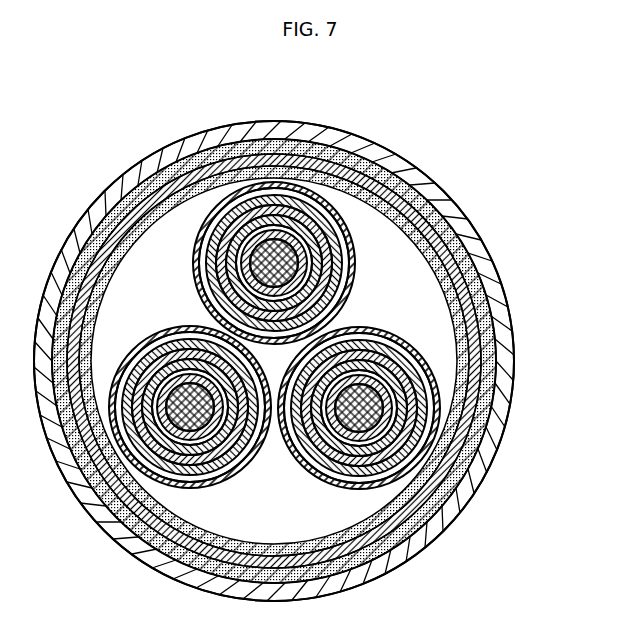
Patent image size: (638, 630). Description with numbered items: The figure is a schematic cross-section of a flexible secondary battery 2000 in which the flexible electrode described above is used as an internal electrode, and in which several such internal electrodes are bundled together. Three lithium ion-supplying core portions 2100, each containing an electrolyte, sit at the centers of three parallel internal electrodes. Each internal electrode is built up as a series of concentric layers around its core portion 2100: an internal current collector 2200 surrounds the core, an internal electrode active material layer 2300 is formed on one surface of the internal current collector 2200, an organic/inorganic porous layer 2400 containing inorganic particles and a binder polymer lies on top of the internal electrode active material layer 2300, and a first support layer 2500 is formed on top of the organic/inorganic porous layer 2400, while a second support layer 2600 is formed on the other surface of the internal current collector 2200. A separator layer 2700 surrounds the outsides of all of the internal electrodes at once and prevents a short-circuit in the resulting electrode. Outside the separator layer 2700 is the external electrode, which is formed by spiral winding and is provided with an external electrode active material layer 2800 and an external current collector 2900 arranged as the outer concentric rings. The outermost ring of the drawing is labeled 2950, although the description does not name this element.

The flexible secondary battery 2000 is at (93, 147).
The lithium ion-supplying core portion 2100 is at (272, 228).
The second support layer 2600 is at (283, 215).
The internal current collector 2200 is at (302, 210).
The internal electrode active material layer 2300 is at (330, 205).
The organic/inorganic porous layer 2400 is at (360, 245).
The first support layer 2500 is at (380, 243).
The separator layer 2700 is at (413, 263).
The external electrode active material layer 2800 is at (457, 280).
The external current collector 2900 is at (485, 302).
The outer jacket 2950 is at (498, 327).